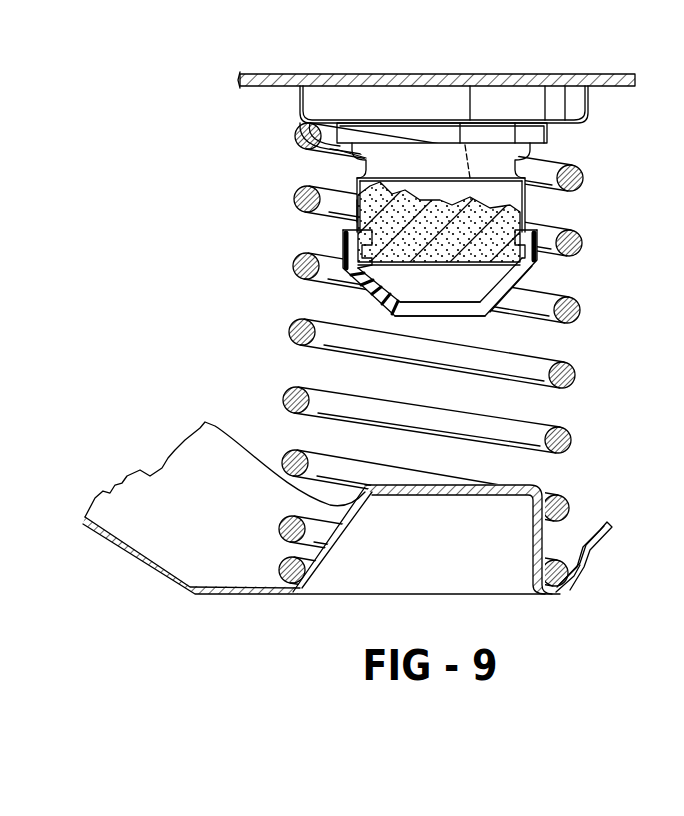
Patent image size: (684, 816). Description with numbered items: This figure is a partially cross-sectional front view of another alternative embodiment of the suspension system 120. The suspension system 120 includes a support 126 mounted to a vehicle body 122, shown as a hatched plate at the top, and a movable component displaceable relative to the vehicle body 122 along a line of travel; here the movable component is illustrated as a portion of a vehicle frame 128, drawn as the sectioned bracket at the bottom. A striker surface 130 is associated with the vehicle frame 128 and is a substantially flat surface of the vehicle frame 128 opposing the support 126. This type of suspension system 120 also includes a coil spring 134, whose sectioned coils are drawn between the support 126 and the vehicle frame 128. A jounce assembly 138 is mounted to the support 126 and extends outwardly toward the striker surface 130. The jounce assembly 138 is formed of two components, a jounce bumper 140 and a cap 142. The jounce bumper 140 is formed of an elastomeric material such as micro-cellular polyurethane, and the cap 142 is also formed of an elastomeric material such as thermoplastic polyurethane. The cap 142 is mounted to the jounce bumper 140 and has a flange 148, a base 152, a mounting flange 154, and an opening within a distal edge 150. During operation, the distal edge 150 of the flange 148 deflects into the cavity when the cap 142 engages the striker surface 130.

The suspension system 120 is at (266, 313).
The vehicle body 122 is at (273, 73).
The support 126 is at (580, 104).
The vehicle frame 128 is at (358, 577).
The striker surface 130 is at (480, 483).
The coil spring 134 is at (357, 210).
The jounce assembly 138 is at (549, 205).
The jounce bumper 140 is at (392, 170).
The cap 142 is at (548, 272).
The flange 148 is at (422, 278).
The distal edge 150 is at (484, 312).
The base 152 is at (545, 248).
The mounting flange 154 is at (345, 235).